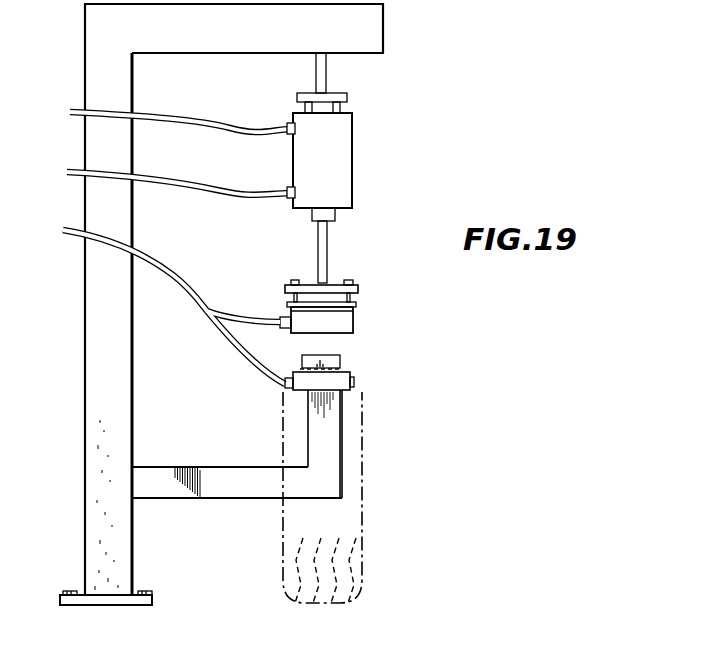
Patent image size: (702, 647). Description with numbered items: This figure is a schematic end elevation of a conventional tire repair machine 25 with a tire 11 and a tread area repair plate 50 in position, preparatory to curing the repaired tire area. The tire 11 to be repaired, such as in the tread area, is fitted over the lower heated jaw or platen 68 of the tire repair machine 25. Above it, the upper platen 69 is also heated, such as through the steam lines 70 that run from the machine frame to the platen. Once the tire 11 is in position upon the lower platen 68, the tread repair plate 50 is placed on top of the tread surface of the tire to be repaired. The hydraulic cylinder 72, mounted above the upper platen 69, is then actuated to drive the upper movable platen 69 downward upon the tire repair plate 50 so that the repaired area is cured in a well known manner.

The tire repair machine 25 is at (421, 167).
The hydraulic cylinder 72 is at (334, 165).
The upper platen 69 is at (362, 320).
The steam lines 70 is at (173, 276).
The tread repair plate 50 is at (340, 356).
The lower heated jaw or platen 68 is at (360, 382).
The tire 11 is at (363, 445).